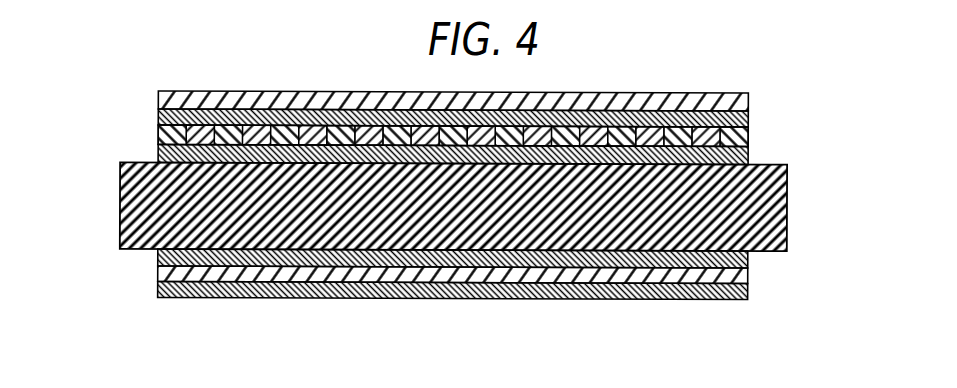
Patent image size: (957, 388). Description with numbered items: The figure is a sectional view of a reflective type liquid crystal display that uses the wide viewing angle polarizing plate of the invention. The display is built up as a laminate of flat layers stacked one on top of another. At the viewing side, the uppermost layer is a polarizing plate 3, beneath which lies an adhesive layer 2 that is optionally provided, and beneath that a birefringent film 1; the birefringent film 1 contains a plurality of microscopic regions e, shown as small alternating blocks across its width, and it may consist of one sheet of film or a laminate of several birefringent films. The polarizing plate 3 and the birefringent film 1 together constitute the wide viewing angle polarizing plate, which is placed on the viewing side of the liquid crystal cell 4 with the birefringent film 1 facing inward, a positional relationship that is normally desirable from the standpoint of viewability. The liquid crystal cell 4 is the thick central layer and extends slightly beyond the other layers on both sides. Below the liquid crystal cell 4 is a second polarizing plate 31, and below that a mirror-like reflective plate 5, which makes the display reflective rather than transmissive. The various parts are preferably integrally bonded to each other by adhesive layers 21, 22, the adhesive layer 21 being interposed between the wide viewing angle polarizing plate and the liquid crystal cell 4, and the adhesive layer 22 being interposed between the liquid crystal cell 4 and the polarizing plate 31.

The birefringent film 1 is at (451, 142).
The adhesive layer 2 is at (749, 122).
The polarizing plate 3 is at (749, 102).
The liquid crystal cell 4 is at (788, 205).
The mirror-like reflective plate 5 is at (749, 293).
The adhesive layer 21 is at (749, 156).
The adhesive layer 22 is at (749, 266).
The polarizing plate 31 is at (749, 278).
The microscopic region e is at (185, 140).